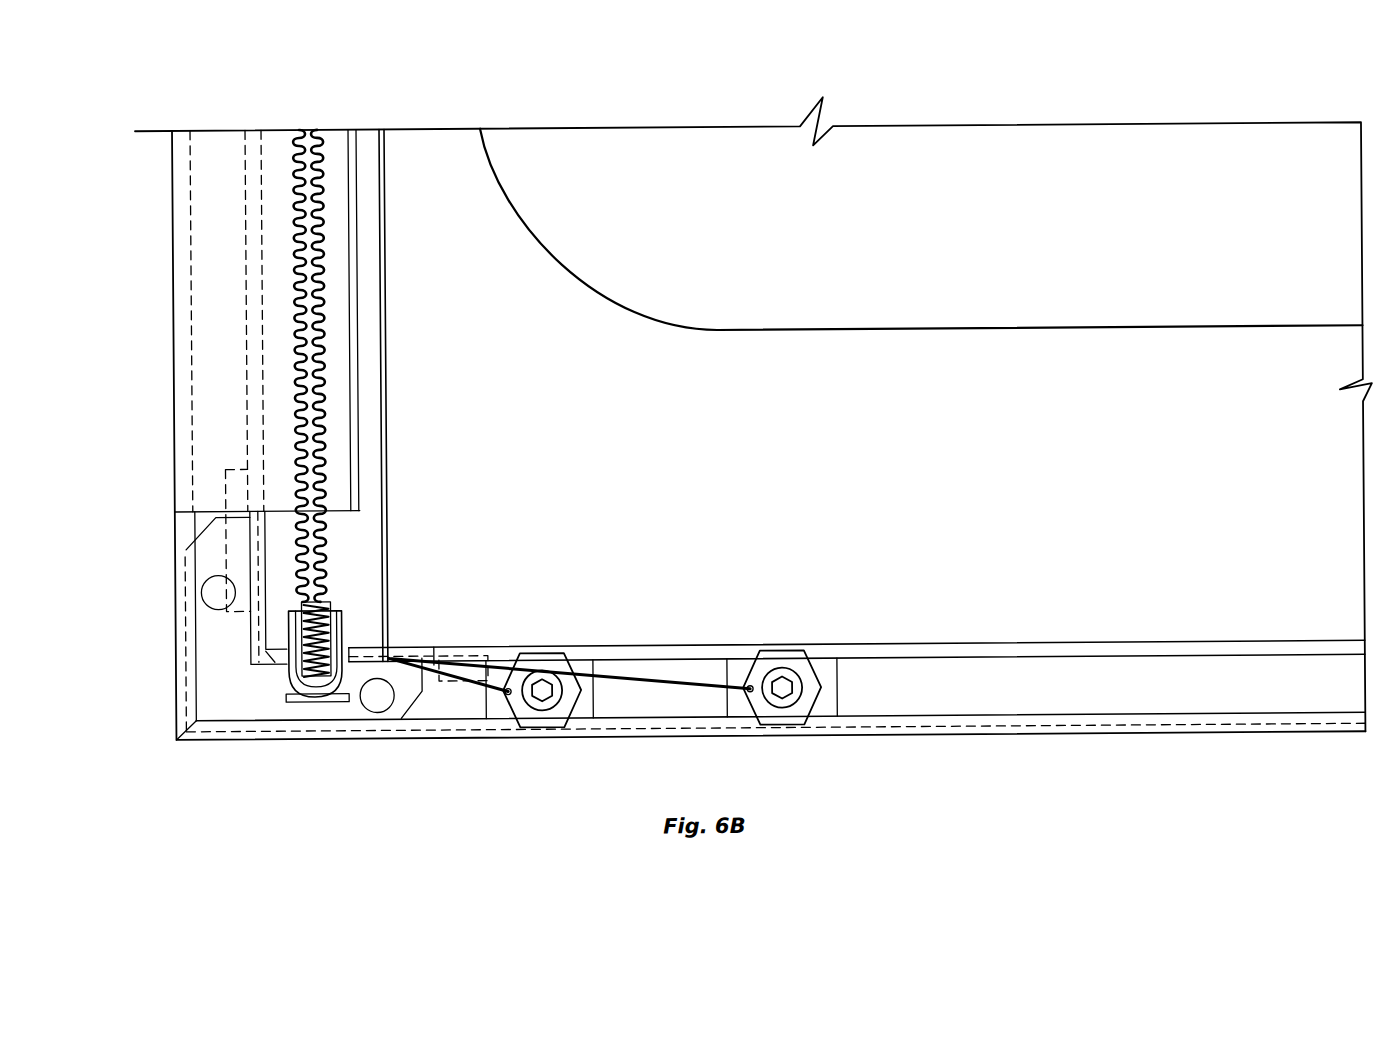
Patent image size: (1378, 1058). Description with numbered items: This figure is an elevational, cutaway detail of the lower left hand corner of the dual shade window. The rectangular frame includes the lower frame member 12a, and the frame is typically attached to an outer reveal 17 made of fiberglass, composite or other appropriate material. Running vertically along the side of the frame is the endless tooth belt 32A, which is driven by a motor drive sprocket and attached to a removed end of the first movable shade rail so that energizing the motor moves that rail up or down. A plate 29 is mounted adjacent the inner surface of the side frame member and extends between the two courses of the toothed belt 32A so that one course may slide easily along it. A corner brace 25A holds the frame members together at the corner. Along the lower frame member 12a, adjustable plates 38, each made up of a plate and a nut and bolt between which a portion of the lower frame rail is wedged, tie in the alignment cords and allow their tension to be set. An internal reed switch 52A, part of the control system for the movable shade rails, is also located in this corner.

The outer reveal 17 is at (894, 481).
The plate 29 is at (208, 322).
The internal reed switch 52A is at (230, 466).
The endless tooth belt 32A is at (323, 331).
The corner brace 25A is at (252, 707).
The lower frame member 12a is at (931, 651).
The adjustable plate 38 is at (541, 656).